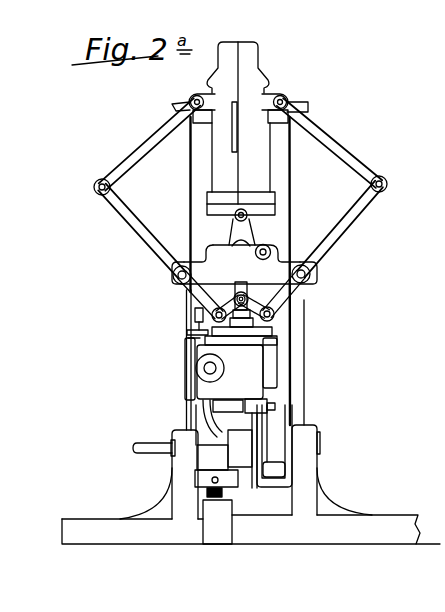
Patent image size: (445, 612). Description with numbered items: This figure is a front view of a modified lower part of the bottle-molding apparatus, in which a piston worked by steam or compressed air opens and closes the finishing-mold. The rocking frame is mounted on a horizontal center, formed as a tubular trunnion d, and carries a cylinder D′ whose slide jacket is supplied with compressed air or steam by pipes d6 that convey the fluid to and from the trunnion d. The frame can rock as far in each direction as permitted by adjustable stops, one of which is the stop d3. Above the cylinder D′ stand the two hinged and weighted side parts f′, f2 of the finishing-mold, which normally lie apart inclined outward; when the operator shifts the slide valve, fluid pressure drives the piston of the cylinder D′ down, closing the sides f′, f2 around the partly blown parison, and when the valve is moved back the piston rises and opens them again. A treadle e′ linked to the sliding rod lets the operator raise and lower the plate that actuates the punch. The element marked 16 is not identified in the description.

The side part of finishing-mold f′ is at (226, 127).
The side part of finishing-mold f2 is at (249, 123).
The cylinder D′ is at (231, 369).
The treadle e′ is at (260, 397).
The pipe 16 is at (216, 418).
The horizontal center / tubular trunnion d is at (240, 448).
The adjustable stop d3 is at (252, 488).
The pipes d6 is at (154, 439).